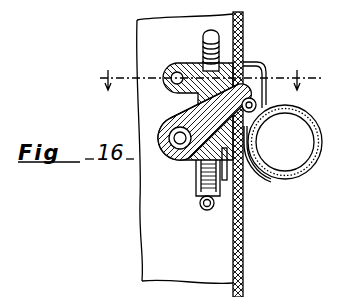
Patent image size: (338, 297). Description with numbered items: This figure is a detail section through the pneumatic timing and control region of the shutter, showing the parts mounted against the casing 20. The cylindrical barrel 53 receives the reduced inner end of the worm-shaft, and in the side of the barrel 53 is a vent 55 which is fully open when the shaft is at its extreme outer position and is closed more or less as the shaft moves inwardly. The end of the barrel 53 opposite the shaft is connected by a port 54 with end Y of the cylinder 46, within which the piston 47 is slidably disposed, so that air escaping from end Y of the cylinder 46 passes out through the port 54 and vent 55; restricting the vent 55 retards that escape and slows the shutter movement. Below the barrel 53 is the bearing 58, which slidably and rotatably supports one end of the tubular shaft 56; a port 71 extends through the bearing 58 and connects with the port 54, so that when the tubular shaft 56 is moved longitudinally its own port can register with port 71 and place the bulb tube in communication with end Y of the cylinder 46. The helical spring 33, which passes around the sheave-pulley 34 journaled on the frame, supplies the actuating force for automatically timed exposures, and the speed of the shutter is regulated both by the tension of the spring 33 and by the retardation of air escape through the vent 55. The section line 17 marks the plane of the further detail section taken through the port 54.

The casing 20 is at (246, 37).
The bearing 58 is at (197, 106).
The cylindrical barrel 53 is at (174, 71).
The port 71 is at (256, 112).
The tubular shaft 56 is at (163, 133).
The vent 55 is at (178, 60).
The port 54 is at (264, 78).
The cylinder 46 is at (299, 181).
The piston 47 is at (274, 183).
The sheave-pulley 34 is at (197, 190).
The helical spring 33 is at (207, 211).
The section line 17- 17 is at (203, 80).